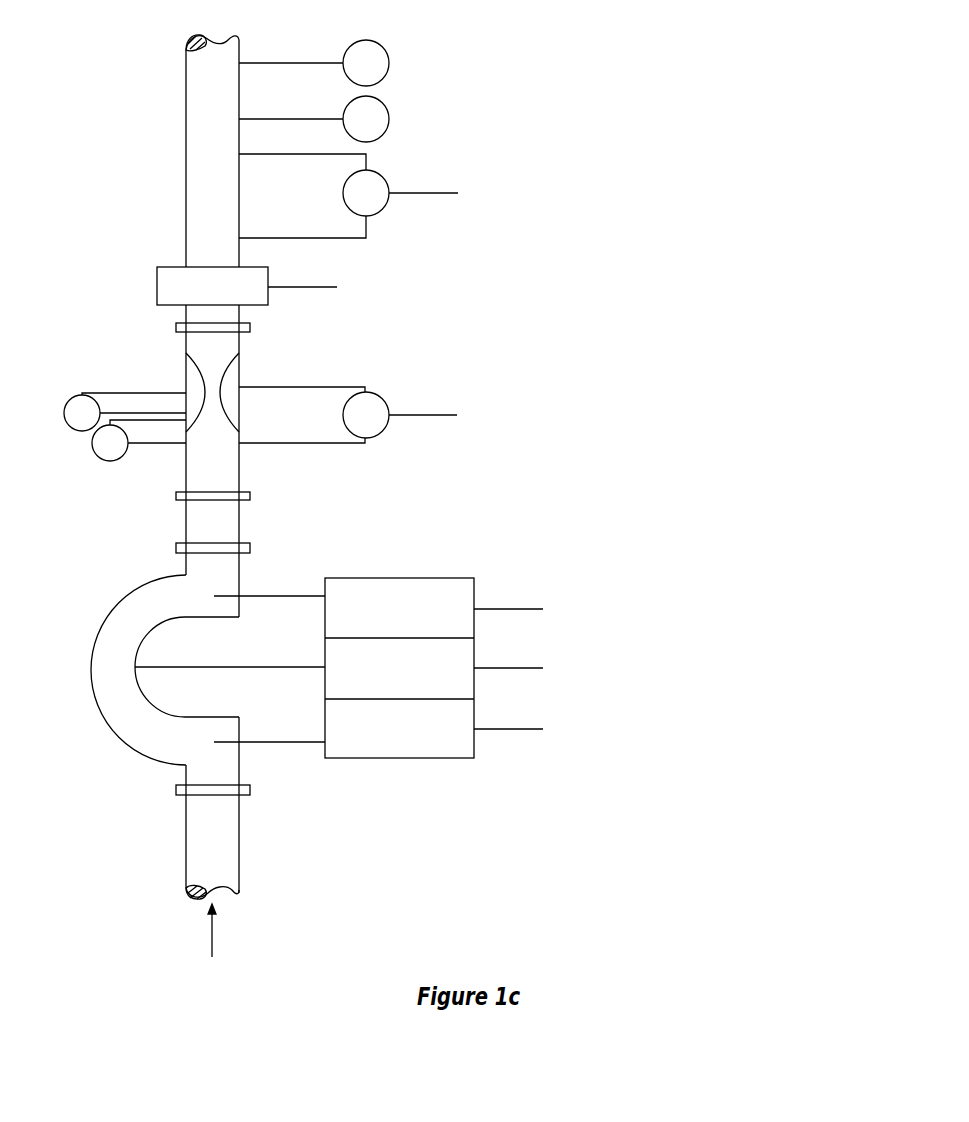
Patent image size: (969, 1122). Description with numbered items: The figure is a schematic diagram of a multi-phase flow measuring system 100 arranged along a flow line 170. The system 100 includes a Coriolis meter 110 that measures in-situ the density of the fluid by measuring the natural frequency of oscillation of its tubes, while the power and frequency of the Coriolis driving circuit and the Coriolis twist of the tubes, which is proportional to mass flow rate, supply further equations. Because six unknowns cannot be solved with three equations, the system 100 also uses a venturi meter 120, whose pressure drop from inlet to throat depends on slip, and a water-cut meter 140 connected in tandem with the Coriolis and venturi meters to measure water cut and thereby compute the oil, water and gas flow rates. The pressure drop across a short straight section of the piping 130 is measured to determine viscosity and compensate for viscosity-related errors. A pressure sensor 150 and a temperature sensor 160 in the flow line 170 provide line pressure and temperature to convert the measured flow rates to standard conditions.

The multi-phase flow measuring system 100 is at (607, 73).
The Coriolis meter 110 is at (122, 600).
The venturi meter 120 is at (186, 364).
The short straight section of piping 130 is at (383, 217).
The water-cut meter 140 is at (157, 290).
The pressure sensor 150 is at (390, 118).
The temperature sensor 160 is at (390, 62).
The flow line 170 is at (185, 133).